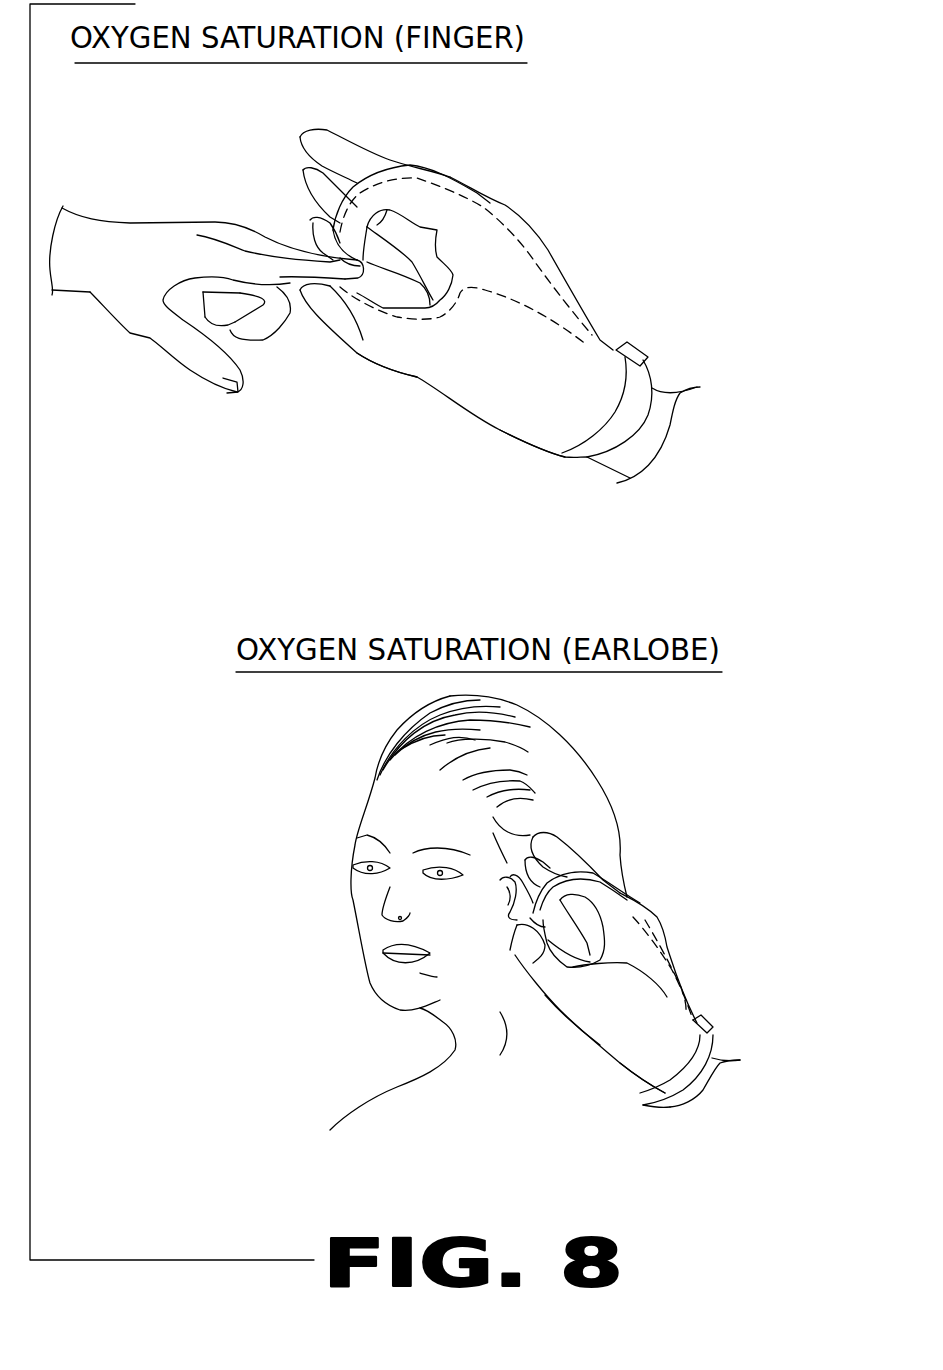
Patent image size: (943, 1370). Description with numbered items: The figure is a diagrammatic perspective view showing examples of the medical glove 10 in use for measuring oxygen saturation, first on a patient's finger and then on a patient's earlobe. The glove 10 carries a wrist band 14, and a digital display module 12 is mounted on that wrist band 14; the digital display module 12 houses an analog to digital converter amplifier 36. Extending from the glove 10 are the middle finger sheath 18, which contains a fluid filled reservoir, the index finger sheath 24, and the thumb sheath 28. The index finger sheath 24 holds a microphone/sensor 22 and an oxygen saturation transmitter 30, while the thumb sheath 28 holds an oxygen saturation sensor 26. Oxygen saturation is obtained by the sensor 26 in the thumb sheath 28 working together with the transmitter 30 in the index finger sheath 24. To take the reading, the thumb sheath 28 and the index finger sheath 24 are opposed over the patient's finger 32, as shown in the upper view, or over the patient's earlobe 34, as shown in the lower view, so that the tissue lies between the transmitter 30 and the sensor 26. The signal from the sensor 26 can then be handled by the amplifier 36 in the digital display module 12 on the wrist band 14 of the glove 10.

The medical glove 10 is at (543, 242).
The digital display module 12 is at (648, 356).
The wrist band 14 is at (563, 445).
The middle finger sheath 18 is at (333, 143).
The microphone/sensor 22 is at (367, 260).
The index finger sheath 24 is at (417, 197).
The oxygen saturation sensor 26 is at (348, 290).
The thumb sheath 28 is at (393, 360).
The oxygen saturation transmitter 30 is at (361, 258).
The finger 32 is at (286, 265).
The earlobe 34 is at (518, 937).
The analog to digital converter amplifier 36 is at (623, 343).